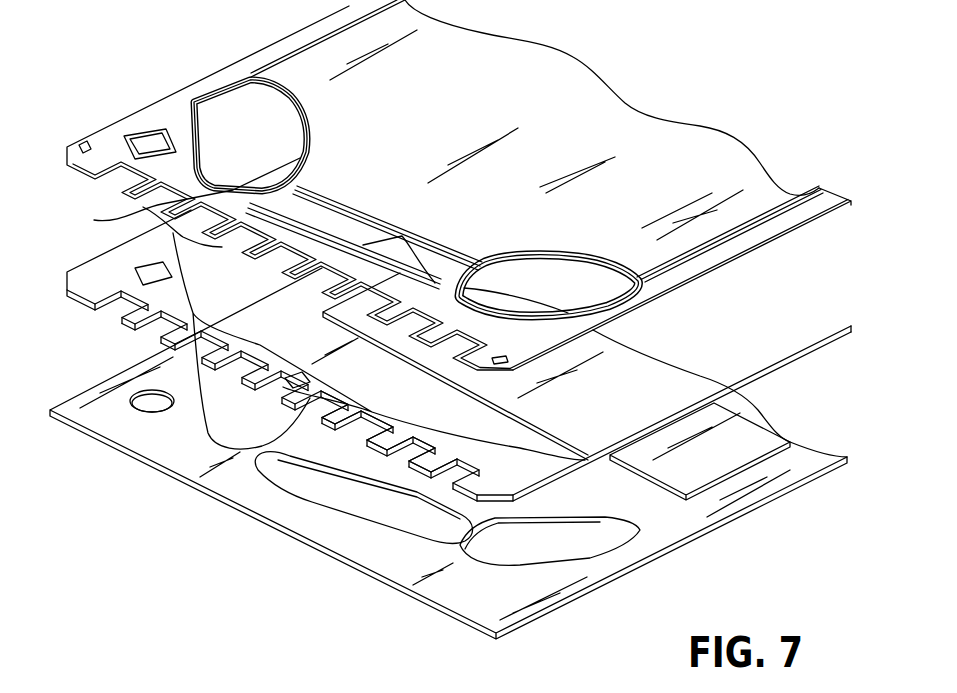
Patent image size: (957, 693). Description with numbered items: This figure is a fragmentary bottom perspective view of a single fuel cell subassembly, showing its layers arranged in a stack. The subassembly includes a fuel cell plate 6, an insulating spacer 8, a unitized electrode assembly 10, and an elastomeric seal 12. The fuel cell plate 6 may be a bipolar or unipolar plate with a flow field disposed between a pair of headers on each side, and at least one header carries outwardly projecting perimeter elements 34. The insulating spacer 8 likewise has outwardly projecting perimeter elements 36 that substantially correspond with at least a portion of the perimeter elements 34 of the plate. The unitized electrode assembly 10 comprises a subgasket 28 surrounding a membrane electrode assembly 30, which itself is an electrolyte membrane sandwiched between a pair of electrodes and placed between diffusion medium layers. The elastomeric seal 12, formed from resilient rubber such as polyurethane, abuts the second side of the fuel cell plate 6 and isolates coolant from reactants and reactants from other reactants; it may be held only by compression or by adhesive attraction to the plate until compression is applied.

The fuel cell plate 6 is at (660, 140).
The insulating spacer 8 is at (522, 473).
The unitized electrode assembly 10 is at (763, 507).
The elastomeric seal 12 is at (792, 203).
The subgasket 28 is at (487, 428).
The membrane electrode assembly 30 is at (612, 368).
The outwardly projecting perimeter elements 34 is at (162, 204).
The outwardly projecting perimeter elements 36 is at (388, 432).